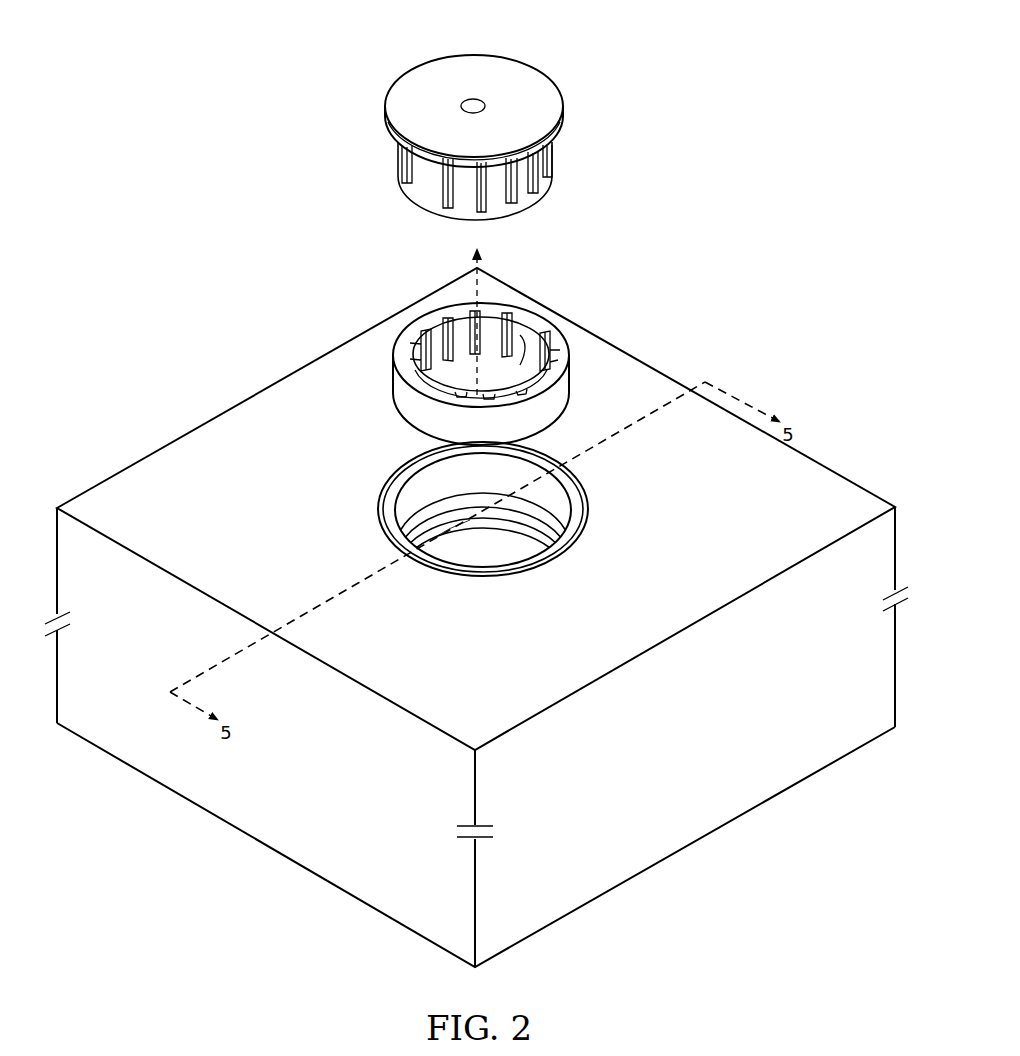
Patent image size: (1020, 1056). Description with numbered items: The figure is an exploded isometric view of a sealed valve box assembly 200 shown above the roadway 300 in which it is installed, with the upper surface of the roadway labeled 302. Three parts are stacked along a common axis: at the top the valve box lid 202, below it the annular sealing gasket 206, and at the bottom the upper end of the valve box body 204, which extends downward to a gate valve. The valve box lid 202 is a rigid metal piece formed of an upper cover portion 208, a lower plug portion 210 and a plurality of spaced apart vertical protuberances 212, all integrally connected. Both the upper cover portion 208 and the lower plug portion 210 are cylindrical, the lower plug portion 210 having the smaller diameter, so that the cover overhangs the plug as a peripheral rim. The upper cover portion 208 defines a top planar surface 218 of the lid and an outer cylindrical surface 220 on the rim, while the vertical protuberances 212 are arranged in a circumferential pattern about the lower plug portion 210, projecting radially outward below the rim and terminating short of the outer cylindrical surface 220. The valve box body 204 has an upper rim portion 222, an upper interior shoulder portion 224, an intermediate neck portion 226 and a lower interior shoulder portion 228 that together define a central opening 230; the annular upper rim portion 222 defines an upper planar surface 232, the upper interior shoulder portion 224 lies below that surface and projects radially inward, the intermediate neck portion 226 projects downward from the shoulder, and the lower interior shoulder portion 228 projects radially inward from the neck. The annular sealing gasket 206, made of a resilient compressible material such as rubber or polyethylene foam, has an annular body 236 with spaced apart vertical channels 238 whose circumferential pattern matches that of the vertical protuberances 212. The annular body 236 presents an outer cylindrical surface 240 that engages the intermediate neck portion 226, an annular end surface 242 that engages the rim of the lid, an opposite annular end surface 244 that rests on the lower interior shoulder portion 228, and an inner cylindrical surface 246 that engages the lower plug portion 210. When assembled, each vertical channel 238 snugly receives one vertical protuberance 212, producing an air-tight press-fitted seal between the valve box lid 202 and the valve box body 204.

The sealed valve box assembly 200 is at (372, 316).
The valve box lid 202 is at (480, 133).
The valve box body 204 is at (477, 527).
The annular sealing gasket 206 is at (434, 372).
The upper cover portion 208 is at (551, 82).
The lower plug portion 210 is at (420, 190).
The vertical protuberances 212 is at (448, 208).
The top planar surface 218 is at (490, 60).
The outer cylindrical surface 220 is at (557, 135).
The upper rim portion 222 is at (412, 487).
The upper interior shoulder portion 224 is at (400, 537).
The intermediate neck portion 226 is at (420, 540).
The lower interior shoulder portion 228 is at (484, 528).
The central opening 230 is at (557, 515).
The upper planar surface 232 is at (395, 522).
The annular body 236 is at (390, 347).
The vertical channels 238 is at (415, 330).
The outer cylindrical surface 240 is at (408, 413).
The annular end surface 242 is at (560, 325).
The opposite annular end surface 244 is at (410, 455).
The inner cylindrical surface 246 is at (528, 345).
The roadway 300 is at (476, 617).
The top surface 302 is at (218, 513).